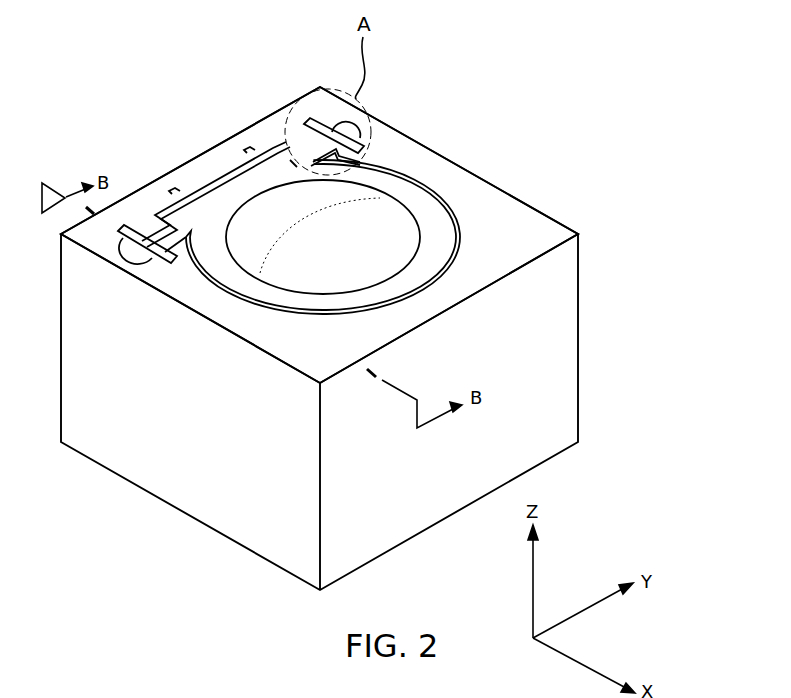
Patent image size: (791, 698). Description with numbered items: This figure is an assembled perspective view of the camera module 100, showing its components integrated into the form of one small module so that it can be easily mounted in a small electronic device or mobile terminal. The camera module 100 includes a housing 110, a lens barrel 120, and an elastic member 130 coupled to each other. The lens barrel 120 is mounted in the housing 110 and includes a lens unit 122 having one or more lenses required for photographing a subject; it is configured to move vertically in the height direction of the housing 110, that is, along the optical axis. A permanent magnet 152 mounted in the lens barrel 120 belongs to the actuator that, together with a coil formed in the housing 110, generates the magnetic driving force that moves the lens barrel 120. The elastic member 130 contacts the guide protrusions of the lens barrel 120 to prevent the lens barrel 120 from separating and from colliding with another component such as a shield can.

The camera module 100 is at (431, 134).
The housing 110 is at (176, 470).
The lens barrel 120 is at (432, 232).
The lens unit 122 is at (390, 228).
The elastic member 130 is at (313, 124).
The permanent magnet 152 is at (218, 178).